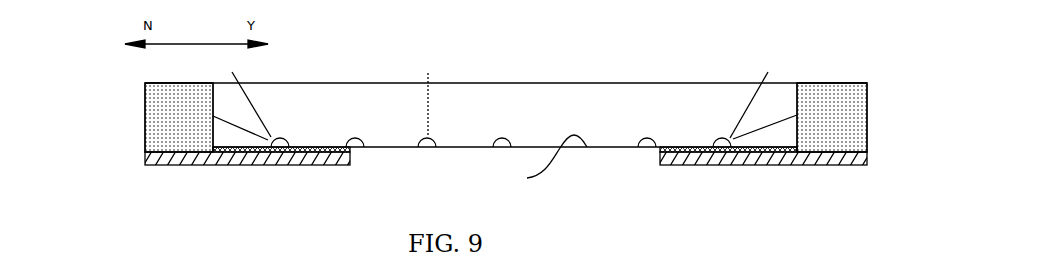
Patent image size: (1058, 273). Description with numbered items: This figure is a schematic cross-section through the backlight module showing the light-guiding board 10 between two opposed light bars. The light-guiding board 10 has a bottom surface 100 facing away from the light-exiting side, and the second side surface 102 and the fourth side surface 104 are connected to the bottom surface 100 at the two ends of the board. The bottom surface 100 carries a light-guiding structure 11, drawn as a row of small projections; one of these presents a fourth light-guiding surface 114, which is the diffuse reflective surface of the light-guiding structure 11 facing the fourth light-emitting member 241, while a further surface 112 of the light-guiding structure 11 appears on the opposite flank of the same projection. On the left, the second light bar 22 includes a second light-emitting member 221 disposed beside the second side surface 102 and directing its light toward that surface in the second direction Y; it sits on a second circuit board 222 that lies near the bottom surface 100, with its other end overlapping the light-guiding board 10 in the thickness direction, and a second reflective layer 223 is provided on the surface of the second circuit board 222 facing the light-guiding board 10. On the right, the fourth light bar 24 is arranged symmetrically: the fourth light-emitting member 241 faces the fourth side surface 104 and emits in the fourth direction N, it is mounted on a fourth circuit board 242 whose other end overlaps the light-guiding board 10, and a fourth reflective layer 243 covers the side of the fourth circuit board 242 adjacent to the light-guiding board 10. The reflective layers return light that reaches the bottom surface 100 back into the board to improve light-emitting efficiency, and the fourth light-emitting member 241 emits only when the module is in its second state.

The light-guiding board 10 is at (607, 93).
The light-guiding structure 11 is at (428, 73).
The bottom surface 100 is at (467, 150).
The second side surface 102 is at (213, 100).
The fourth side surface 104 is at (800, 100).
The protrusion 112 is at (537, 162).
The fourth light-guiding surface 114 is at (587, 147).
The second light bar 22 is at (200, 136).
The second light-emitting member 221 is at (167, 122).
The second circuit board 222 is at (150, 158).
The second reflective layer 223 is at (246, 152).
The fourth light bar 24 is at (803, 137).
The fourth light-emitting member 241 is at (843, 122).
The fourth circuit board 242 is at (860, 157).
The fourth reflective layer 243 is at (753, 150).